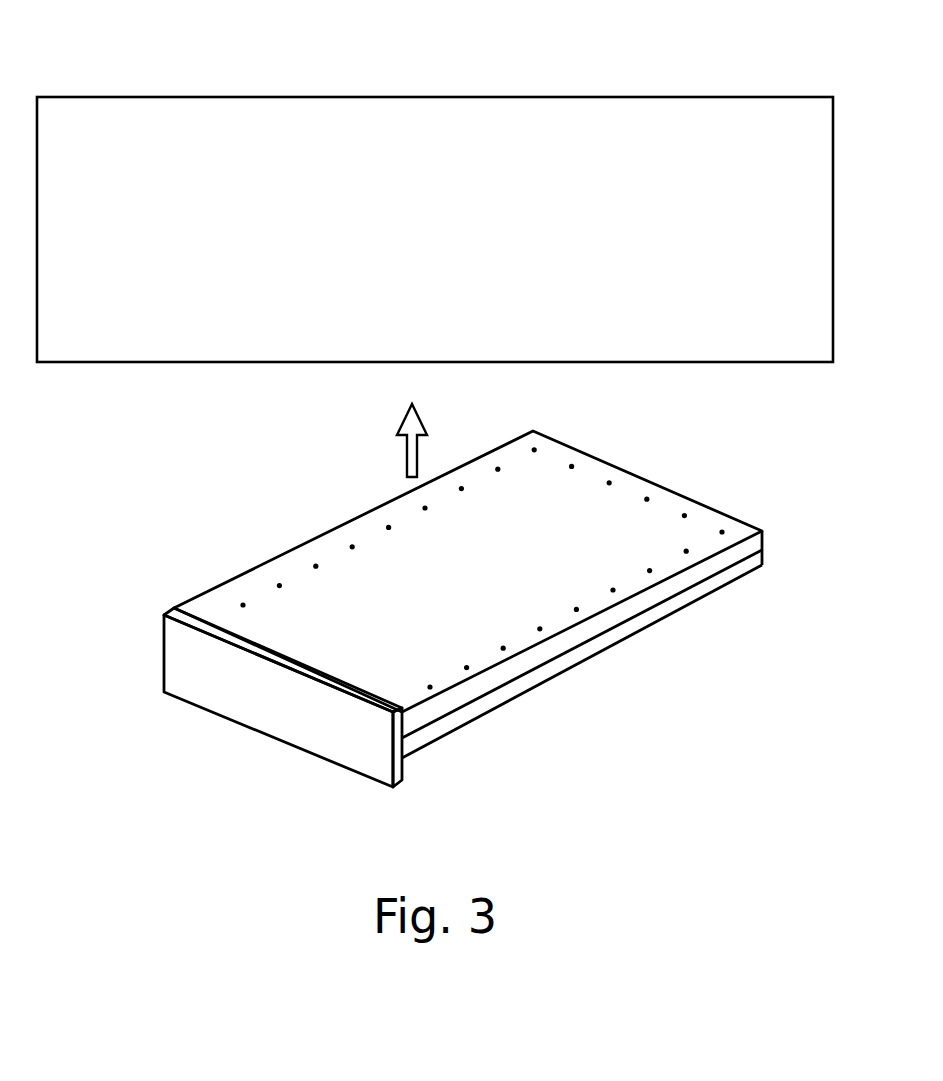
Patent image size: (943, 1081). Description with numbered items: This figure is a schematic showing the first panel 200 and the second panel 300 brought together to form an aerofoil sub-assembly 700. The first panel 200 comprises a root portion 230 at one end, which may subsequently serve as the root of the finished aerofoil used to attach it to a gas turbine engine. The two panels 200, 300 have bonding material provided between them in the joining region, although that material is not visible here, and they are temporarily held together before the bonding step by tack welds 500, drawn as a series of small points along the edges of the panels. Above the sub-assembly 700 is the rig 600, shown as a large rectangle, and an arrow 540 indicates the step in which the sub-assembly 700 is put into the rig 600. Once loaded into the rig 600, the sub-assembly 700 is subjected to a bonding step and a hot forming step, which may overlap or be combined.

The rig 600 is at (737, 115).
The mounting direction arrow 540 is at (404, 450).
The second panel 300 is at (565, 462).
The first panel 200 is at (440, 727).
The root portion 230 is at (182, 662).
The tack welds 500 is at (350, 548).
The aerofoil sub-assembly 700 is at (409, 620).